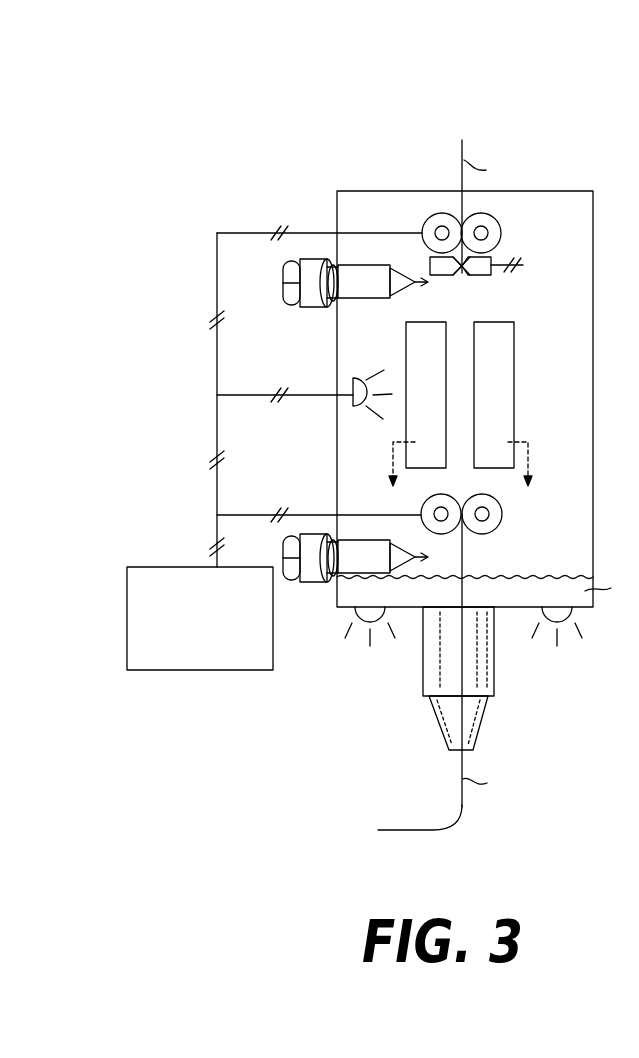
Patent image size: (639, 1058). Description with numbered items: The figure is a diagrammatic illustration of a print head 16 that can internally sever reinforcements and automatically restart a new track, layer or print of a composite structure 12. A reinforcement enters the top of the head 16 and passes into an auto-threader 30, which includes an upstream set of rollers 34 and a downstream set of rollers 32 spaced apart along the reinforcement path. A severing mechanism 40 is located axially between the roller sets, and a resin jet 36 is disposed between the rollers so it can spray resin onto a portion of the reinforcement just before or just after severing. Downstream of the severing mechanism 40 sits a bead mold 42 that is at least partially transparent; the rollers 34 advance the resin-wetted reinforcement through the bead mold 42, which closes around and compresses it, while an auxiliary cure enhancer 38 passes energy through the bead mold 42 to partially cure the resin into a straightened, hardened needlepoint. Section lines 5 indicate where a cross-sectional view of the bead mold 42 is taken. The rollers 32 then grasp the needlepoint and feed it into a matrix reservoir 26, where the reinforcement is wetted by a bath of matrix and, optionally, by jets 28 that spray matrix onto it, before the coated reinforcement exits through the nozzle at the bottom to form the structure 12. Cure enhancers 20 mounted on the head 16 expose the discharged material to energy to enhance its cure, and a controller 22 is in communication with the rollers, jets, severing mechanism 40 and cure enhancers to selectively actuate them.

The head 16 is at (166, 86).
The auto-threader 30 is at (545, 205).
The second or upstream set of rollers 34 is at (500, 231).
The severing mechanism 40 is at (480, 272).
The resin jet 36 is at (353, 293).
The bead mold 42 is at (502, 388).
The section line 5 is at (460, 475).
The auxiliary cure enhancer 38 is at (352, 403).
The first or downstream set of rollers 32 is at (496, 523).
The jets 28 is at (353, 568).
The controller 22 is at (189, 631).
The cure enhancers 20 is at (352, 612).
The matrix reservoir 26 is at (507, 610).
The composite structure 12 is at (400, 827).